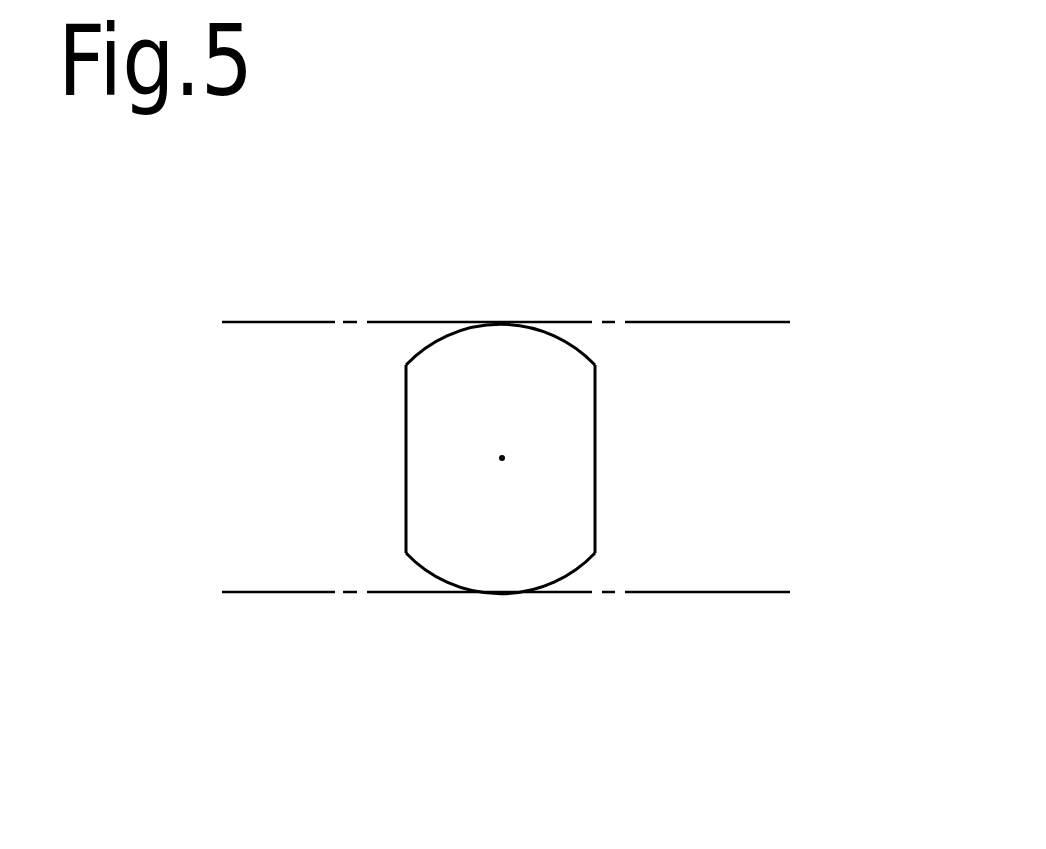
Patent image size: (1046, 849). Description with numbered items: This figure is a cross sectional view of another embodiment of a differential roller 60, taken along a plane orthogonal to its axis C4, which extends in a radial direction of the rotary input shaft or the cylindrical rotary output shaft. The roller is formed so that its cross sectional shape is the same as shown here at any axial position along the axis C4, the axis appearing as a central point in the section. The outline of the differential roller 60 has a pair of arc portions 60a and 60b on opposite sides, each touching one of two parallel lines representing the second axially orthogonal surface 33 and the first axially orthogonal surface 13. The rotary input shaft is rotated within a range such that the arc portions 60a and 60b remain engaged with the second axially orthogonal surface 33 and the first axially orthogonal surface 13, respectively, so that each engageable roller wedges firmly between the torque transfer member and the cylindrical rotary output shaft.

The first axially orthogonal surface 13 is at (737, 322).
The second axially orthogonal surface 33 is at (737, 592).
The differential roller 60 is at (564, 464).
The arc portion 60a is at (499, 322).
The arc portion 60b is at (497, 593).
The axis C4 is at (502, 460).